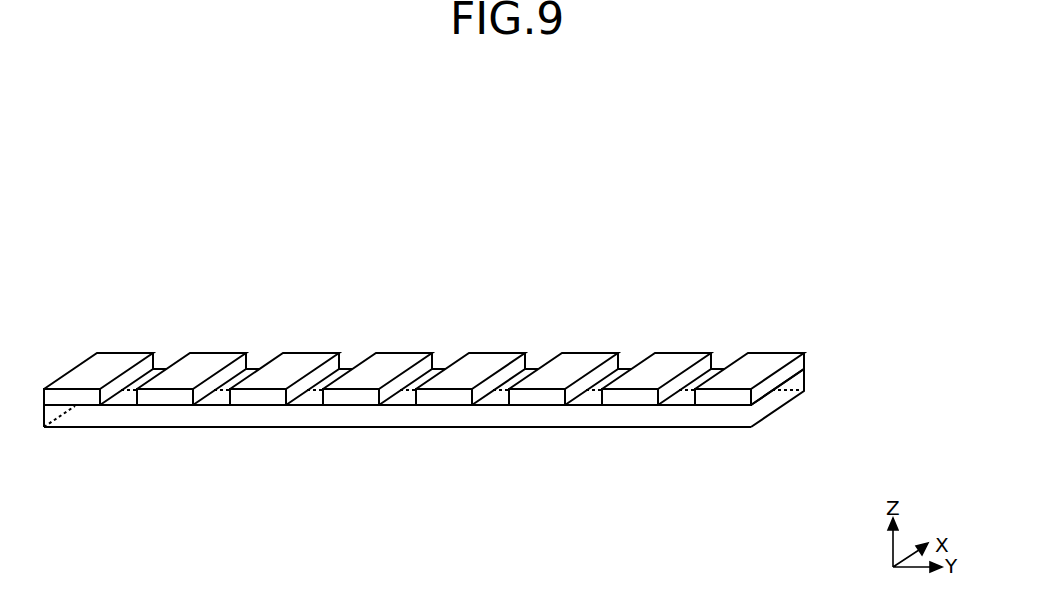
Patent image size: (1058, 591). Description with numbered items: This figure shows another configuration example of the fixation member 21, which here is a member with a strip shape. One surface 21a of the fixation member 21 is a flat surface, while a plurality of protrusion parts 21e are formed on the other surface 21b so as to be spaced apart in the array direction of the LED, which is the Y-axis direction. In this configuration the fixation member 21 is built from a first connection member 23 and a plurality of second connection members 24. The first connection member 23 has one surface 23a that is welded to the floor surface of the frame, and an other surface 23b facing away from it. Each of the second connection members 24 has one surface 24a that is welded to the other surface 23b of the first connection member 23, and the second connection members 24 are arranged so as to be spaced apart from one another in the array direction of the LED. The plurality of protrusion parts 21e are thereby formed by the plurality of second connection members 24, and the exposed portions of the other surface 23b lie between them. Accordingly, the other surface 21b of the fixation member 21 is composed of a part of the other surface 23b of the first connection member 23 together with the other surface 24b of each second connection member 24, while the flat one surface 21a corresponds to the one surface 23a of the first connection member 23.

The fixation member 21 is at (773, 136).
The one surface of the fixation member 21a is at (255, 427).
The other surface of the fixation member 21b is at (617, 485).
The protrusion parts 21e is at (143, 347).
The first connection member 23 is at (807, 381).
The one surface of the first connection member 23a is at (722, 427).
The other surface of the first connection member 23b is at (497, 401).
The second connection members 24 is at (424, 359).
The one surface of the second connection member 24a is at (636, 407).
The other surface of the second connection member 24b is at (540, 382).